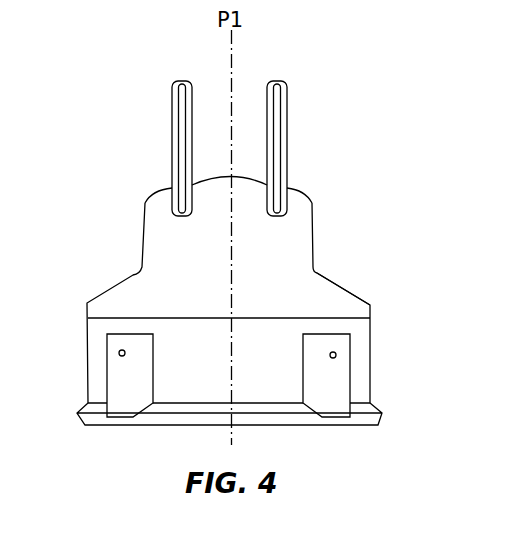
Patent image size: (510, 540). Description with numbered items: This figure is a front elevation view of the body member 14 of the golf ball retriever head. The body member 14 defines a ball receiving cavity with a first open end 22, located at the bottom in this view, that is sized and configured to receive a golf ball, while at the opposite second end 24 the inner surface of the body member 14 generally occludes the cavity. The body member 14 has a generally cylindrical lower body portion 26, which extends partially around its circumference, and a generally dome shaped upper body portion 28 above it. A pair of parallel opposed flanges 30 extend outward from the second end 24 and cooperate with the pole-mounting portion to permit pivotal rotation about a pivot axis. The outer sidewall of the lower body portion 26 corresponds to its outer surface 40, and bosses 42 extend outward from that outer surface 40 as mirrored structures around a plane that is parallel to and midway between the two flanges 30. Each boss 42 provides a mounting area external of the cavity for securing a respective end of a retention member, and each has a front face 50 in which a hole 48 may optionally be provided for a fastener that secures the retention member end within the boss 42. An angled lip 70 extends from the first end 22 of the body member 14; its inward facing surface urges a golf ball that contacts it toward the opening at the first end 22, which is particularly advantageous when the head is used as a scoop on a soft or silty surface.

The body member 14 is at (188, 298).
The first open end 22 is at (348, 428).
The second end 24 is at (297, 207).
The lower body portion 26 is at (363, 337).
The upper body portion 28 is at (325, 293).
The flanges 30 is at (177, 82).
The outer surface 40 is at (207, 375).
The bosses 42 is at (108, 378).
The hole 48 is at (118, 350).
The front faces 50 is at (122, 403).
The angled lip 70 is at (77, 423).